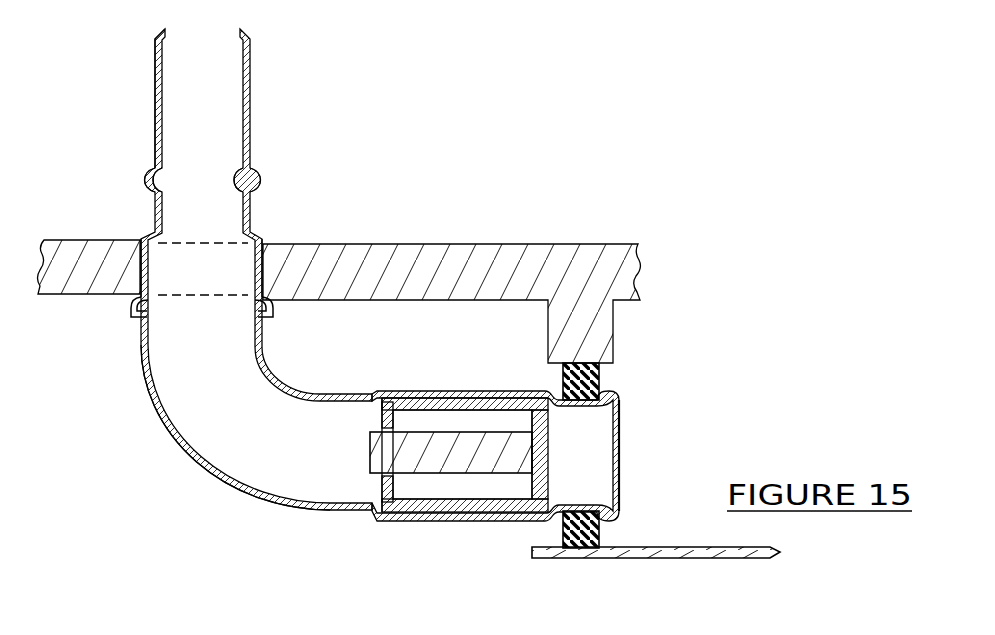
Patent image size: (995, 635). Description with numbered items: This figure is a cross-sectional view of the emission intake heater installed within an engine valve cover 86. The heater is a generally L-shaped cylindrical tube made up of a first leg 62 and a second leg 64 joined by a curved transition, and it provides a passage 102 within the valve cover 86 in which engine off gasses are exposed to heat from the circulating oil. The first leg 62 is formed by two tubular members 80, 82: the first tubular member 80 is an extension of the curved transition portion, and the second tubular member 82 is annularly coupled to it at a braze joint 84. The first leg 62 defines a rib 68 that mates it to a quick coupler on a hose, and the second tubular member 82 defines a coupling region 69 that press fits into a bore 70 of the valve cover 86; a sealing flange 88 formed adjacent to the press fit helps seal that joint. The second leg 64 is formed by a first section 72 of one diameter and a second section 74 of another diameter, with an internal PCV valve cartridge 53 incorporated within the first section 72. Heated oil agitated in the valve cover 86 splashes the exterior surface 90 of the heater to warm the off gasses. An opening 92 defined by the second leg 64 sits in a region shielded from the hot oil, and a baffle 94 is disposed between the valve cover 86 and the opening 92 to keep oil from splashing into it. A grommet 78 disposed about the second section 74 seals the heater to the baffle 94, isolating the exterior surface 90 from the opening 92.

The PCV valve cartridge 53 is at (398, 497).
The first leg 62 is at (259, 215).
The second leg 64 is at (437, 513).
The rib 68 is at (262, 181).
The coupling region 69 is at (263, 275).
The bore 70 is at (138, 265).
The first section 72 is at (483, 513).
The second section 74 is at (601, 406).
The grommet 78 is at (600, 527).
The first tubular member 80 is at (221, 274).
The second tubular member 82 is at (155, 84).
The braze joint 84 is at (263, 288).
The valve cover 86 is at (472, 268).
The sealing flange 88 is at (133, 305).
The exterior surface 90 is at (230, 480).
The opening 92 is at (603, 457).
The baffle 94 is at (717, 558).
The passage 102 is at (213, 141).